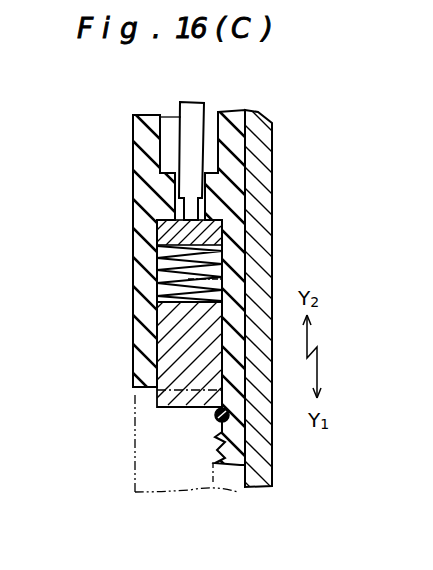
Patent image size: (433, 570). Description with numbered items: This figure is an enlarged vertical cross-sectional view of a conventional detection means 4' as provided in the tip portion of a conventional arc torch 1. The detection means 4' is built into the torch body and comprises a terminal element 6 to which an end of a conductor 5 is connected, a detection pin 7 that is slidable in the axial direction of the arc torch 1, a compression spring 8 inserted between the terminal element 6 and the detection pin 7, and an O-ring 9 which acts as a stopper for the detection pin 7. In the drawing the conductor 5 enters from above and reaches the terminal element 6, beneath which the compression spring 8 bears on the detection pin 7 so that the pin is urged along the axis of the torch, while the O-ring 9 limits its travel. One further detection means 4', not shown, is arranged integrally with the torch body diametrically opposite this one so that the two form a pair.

The arc torch 1 is at (258, 104).
The detection means 4' is at (37, 301).
The conductor 5 is at (187, 188).
The terminal element 6 is at (162, 244).
The compression spring 8 is at (165, 286).
The detection pin 7 is at (168, 338).
The O-ring 9 is at (214, 413).